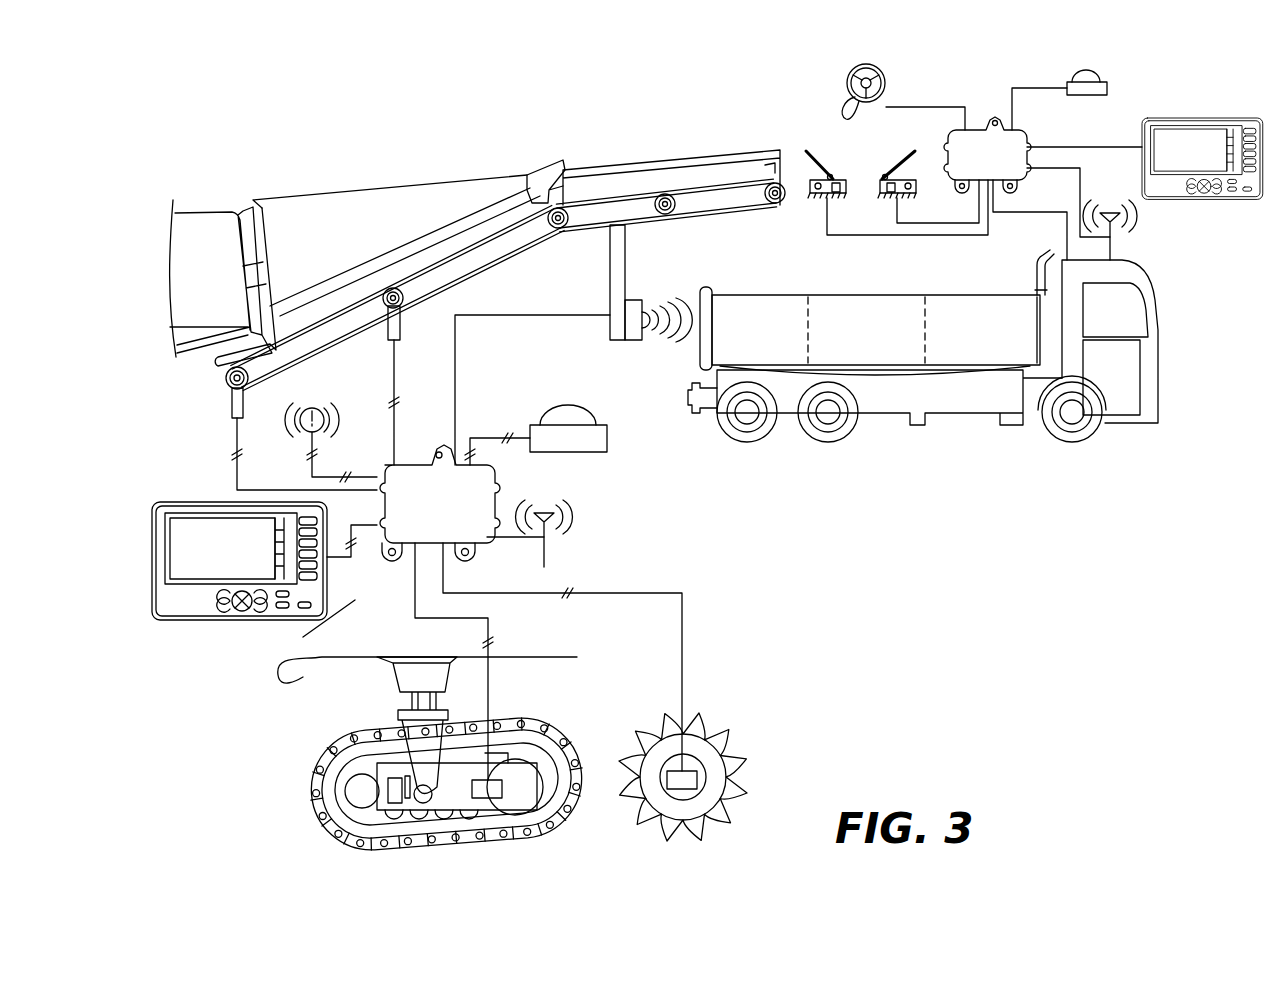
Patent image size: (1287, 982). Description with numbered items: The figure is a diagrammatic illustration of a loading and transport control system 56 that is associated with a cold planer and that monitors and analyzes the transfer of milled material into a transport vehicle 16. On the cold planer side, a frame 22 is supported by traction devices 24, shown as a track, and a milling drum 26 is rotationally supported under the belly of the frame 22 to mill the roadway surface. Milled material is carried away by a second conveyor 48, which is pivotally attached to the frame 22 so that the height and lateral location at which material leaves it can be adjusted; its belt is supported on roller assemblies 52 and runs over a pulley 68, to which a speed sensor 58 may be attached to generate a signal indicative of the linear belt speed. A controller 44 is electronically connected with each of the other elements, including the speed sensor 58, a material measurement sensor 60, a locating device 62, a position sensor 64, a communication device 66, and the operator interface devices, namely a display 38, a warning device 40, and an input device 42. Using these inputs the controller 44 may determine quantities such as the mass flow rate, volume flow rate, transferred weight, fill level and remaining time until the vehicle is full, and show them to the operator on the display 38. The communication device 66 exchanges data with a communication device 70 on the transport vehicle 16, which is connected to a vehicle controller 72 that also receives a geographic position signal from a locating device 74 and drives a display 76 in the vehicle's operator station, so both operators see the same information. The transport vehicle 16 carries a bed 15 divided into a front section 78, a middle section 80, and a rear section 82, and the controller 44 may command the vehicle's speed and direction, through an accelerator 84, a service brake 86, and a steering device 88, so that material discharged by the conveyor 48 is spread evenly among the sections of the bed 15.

The bed 15 is at (874, 295).
The transport vehicle 16 is at (1160, 362).
The frame 22 is at (204, 232).
The traction devices 24 is at (320, 758).
The milling drum 26 is at (744, 758).
The display 38 is at (233, 561).
The warning device 40 is at (306, 432).
The input device 42 is at (340, 627).
The controller 44 is at (444, 514).
The second conveyor 48 is at (426, 150).
The roller assemblies 52 is at (402, 306).
The loading and transport control system 56 is at (952, 560).
The speed sensor 58 is at (232, 403).
The material measurement sensor 60 is at (390, 322).
The locating device 62 is at (580, 448).
The position sensor 64 is at (633, 300).
The communication device 66 is at (547, 550).
The pulley 68 is at (226, 378).
The communication device 70 is at (1112, 250).
The controller 72 is at (999, 162).
The locating device 74 is at (1108, 90).
The display 76 is at (1197, 158).
The front section 78 is at (993, 340).
The middle section 80 is at (881, 340).
The rear section 82 is at (771, 340).
The accelerator 84 is at (882, 172).
The service brake 86 is at (826, 172).
The steering device 88 is at (846, 88).